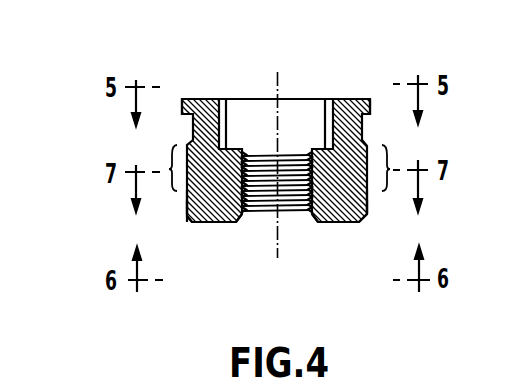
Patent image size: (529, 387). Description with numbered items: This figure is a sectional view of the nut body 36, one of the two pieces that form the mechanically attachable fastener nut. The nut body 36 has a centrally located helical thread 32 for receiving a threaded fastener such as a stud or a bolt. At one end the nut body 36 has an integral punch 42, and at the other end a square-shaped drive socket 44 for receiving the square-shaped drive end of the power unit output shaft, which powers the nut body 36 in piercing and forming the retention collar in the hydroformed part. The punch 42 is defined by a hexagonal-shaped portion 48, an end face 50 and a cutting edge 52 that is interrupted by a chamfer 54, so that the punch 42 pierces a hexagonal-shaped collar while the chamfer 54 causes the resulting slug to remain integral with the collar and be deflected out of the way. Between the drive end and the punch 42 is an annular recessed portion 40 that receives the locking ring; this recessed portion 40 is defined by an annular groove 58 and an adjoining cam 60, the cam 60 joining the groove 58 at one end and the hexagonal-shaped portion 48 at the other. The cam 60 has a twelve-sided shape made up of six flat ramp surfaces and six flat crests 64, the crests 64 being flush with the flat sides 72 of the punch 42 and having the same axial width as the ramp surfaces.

The helical thread 32 is at (315, 188).
The nut body 36 is at (365, 91).
The annular recessed portion 40 is at (191, 128).
The integral punch 42 is at (178, 217).
The square-shaped drive socket 44 is at (223, 127).
The hexagonal-shaped portion 48 is at (384, 226).
The end face 50 is at (214, 227).
The cutting edge 52 is at (186, 223).
The chamfer 54 is at (366, 224).
The annular groove 58 is at (363, 133).
The cam 60 is at (516, 370).
The flat crests 64 is at (170, 170).
The flat sides 72 is at (177, 207).